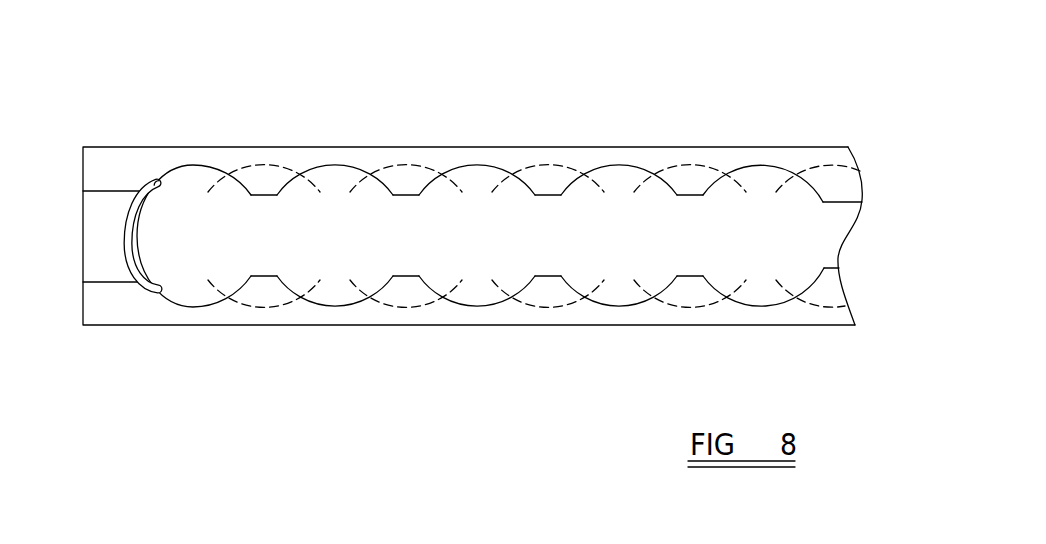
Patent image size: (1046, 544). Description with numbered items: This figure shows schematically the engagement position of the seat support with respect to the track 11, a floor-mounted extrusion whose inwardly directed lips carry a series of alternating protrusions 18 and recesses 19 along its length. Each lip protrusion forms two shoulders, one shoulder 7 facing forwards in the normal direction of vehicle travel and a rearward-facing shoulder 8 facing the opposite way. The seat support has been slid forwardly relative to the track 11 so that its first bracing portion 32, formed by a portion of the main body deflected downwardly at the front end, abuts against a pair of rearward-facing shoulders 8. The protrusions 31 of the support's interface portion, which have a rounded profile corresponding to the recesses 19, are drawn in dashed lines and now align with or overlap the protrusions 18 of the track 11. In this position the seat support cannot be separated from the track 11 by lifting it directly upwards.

The shoulder 7 is at (231, 296).
The rearward-facing shoulder 8 is at (146, 290).
The track 11 is at (83, 300).
The protrusion 18 is at (550, 196).
The recess 19 is at (335, 165).
The protrusion 31 is at (405, 167).
The first bracing portion 32 is at (157, 194).